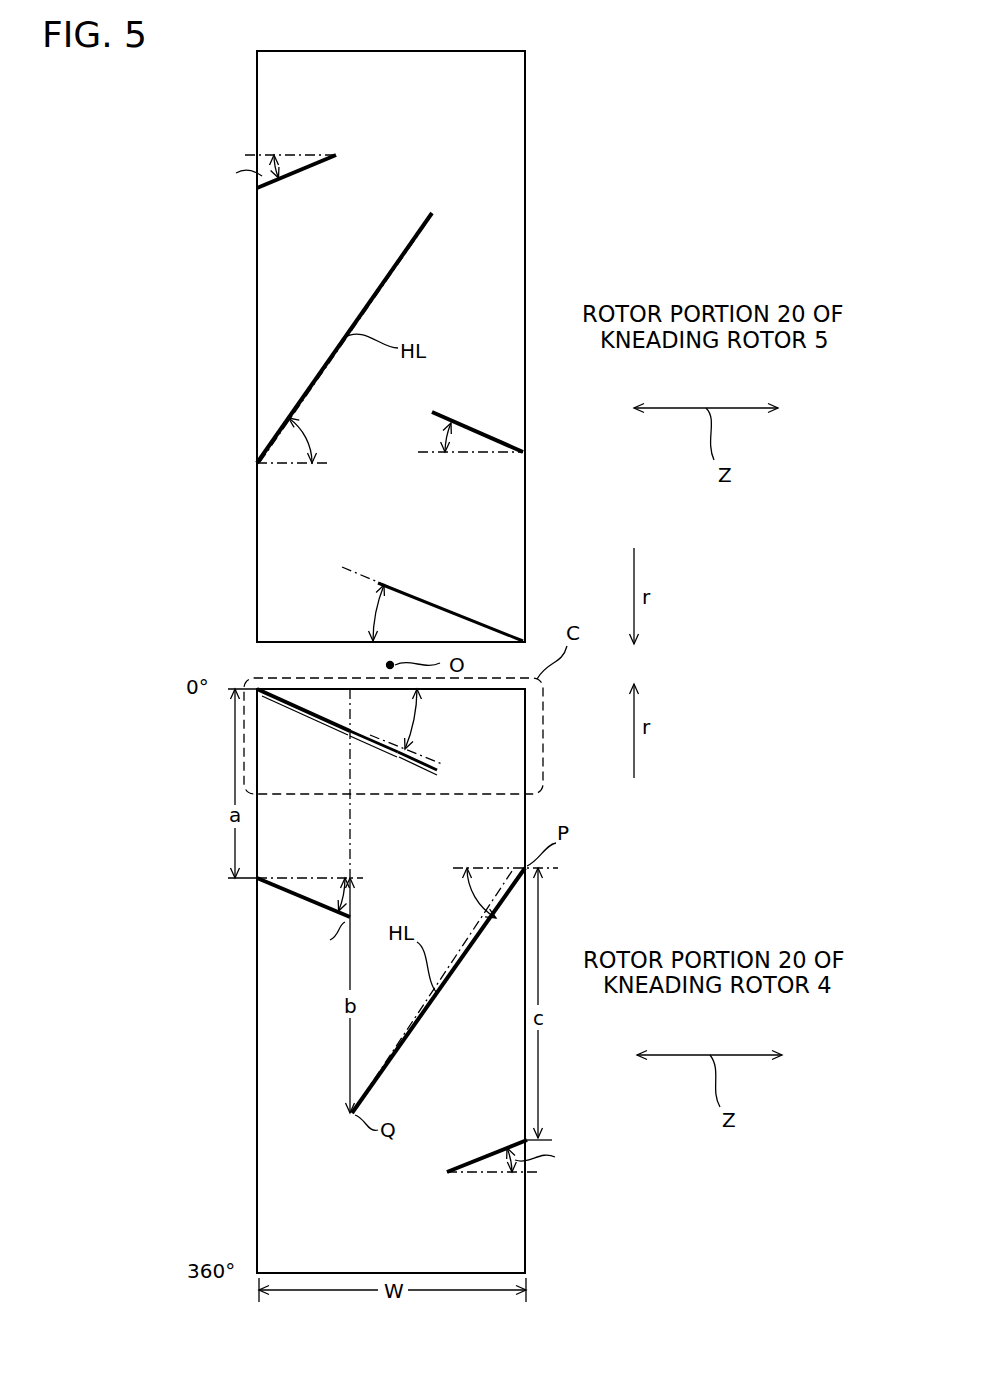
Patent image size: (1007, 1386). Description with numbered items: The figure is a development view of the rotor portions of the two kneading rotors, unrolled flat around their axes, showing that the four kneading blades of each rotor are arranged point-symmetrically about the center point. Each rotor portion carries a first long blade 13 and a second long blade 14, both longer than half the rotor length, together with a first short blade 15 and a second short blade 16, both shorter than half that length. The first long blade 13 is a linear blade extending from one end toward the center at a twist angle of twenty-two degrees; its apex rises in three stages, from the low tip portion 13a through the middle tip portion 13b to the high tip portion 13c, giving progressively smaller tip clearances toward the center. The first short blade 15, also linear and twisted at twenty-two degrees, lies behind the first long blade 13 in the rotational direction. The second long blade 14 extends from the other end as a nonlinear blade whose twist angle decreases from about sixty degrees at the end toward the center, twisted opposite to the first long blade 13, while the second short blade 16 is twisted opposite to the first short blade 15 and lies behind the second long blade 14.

The first long blade 13 is at (382, 684).
The low tip portion 13a is at (303, 715).
The middle tip portion 13b is at (350, 737).
The high tip portion 13c is at (412, 771).
The second long blade 14 is at (328, 333).
The first short blade 15 is at (482, 422).
The second short blade 16 is at (300, 183).